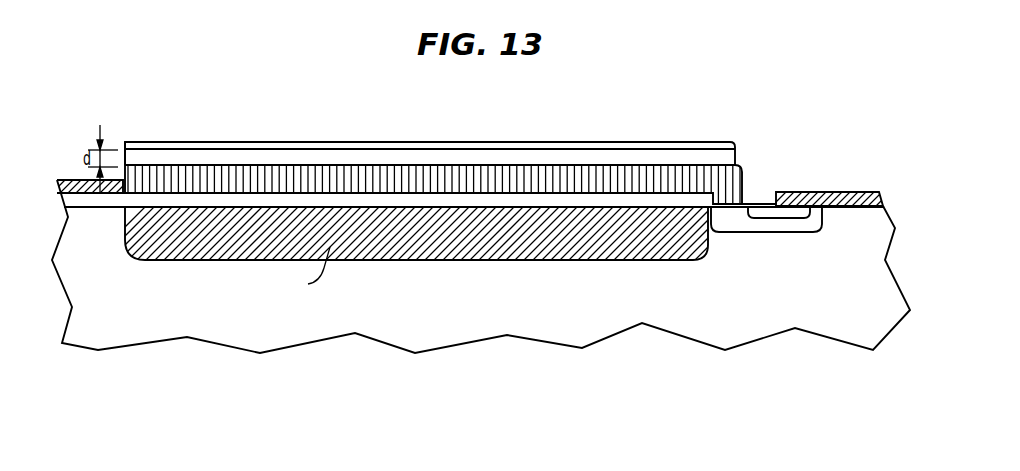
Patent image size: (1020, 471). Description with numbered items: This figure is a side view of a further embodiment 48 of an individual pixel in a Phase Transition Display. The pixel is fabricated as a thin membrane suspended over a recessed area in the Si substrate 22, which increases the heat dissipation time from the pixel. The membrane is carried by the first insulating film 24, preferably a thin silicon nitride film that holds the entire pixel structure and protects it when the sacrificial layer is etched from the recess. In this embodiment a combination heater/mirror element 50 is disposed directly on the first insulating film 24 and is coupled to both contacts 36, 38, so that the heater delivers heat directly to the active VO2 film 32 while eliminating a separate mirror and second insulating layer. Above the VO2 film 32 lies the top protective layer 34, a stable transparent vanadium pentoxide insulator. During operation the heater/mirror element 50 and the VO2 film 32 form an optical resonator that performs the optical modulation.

The Si substrate 22 is at (693, 323).
The first insulating film 24 is at (664, 200).
The VO2 film 32 is at (712, 153).
The top protective layer 34 is at (183, 142).
The contact 36 is at (863, 196).
The contact 38 is at (99, 194).
The embodiment 48 is at (136, 115).
The heater/mirror element 50 is at (743, 192).